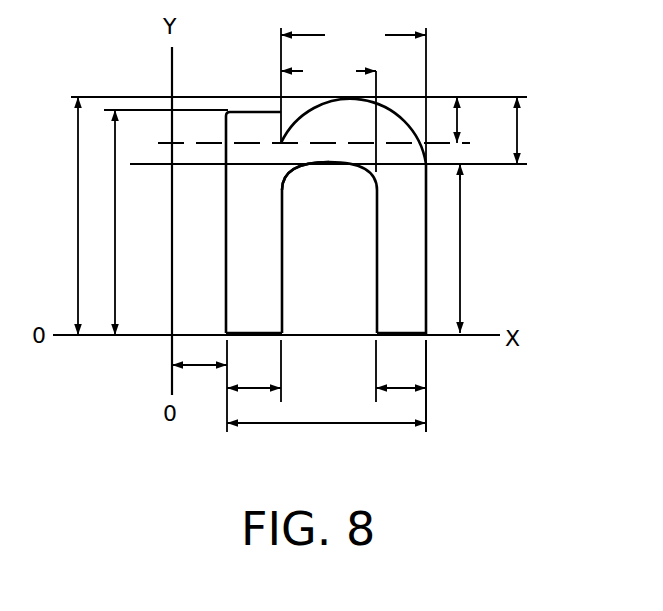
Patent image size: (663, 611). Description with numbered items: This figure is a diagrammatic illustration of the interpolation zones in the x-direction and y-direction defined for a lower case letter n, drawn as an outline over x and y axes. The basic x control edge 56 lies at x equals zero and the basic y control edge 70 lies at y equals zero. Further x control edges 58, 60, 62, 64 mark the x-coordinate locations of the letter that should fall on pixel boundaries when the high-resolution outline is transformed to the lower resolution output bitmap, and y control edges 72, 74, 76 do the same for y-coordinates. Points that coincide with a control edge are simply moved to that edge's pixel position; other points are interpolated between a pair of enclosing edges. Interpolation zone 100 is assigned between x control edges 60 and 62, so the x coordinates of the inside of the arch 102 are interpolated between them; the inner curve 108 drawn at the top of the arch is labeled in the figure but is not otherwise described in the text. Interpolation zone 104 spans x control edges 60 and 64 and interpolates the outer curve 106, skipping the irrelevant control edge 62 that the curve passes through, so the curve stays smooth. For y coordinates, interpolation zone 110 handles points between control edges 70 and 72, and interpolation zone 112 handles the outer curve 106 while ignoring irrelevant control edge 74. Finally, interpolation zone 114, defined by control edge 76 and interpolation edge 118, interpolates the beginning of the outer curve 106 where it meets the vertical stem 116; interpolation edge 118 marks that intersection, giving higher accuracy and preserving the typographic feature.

The basic x control edge 56 is at (172, 381).
The x control edge 58 is at (228, 345).
The x control edge 60 is at (281, 372).
The x control edge 62 is at (376, 362).
The x control edge 64 is at (427, 363).
The basic y control edge 70 is at (64, 334).
The y control edge 72 is at (187, 166).
The y control edge 74 is at (132, 110).
The y control edge 76 is at (91, 97).
The interpolation zone 100 is at (328, 75).
The inside of the arch 102 is at (358, 170).
The interpolation zone 104 is at (353, 35).
The outer curve 106 is at (351, 101).
The inner arcuate surface 108 is at (283, 146).
The interpolation zone 110 is at (461, 256).
The interpolation zone 112 is at (522, 128).
The interpolation zone 114 is at (458, 128).
The vertical stem 116 is at (281, 126).
The interpolation edge 118 is at (465, 168).